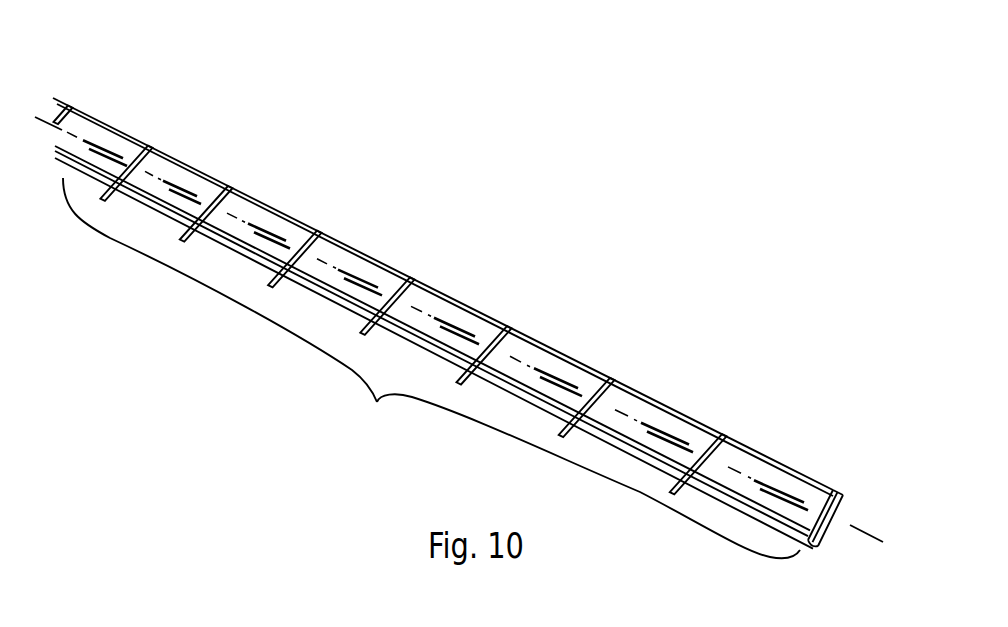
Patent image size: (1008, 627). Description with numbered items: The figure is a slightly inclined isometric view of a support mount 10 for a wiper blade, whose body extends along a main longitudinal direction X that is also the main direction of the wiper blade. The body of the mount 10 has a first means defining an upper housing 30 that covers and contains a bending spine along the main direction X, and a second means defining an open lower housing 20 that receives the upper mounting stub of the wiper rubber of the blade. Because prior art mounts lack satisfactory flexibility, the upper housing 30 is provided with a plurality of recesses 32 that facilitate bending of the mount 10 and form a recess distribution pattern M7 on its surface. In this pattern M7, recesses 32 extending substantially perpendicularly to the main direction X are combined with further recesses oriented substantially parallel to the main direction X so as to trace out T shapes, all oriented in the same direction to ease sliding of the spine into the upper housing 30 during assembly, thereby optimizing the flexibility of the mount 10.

The support mount 10 is at (213, 148).
The recesses 32 is at (508, 324).
The upper housing 30 is at (848, 497).
The open lower housing 20 is at (845, 519).
The main direction X is at (47, 118).
The distribution pattern M7 is at (431, 368).